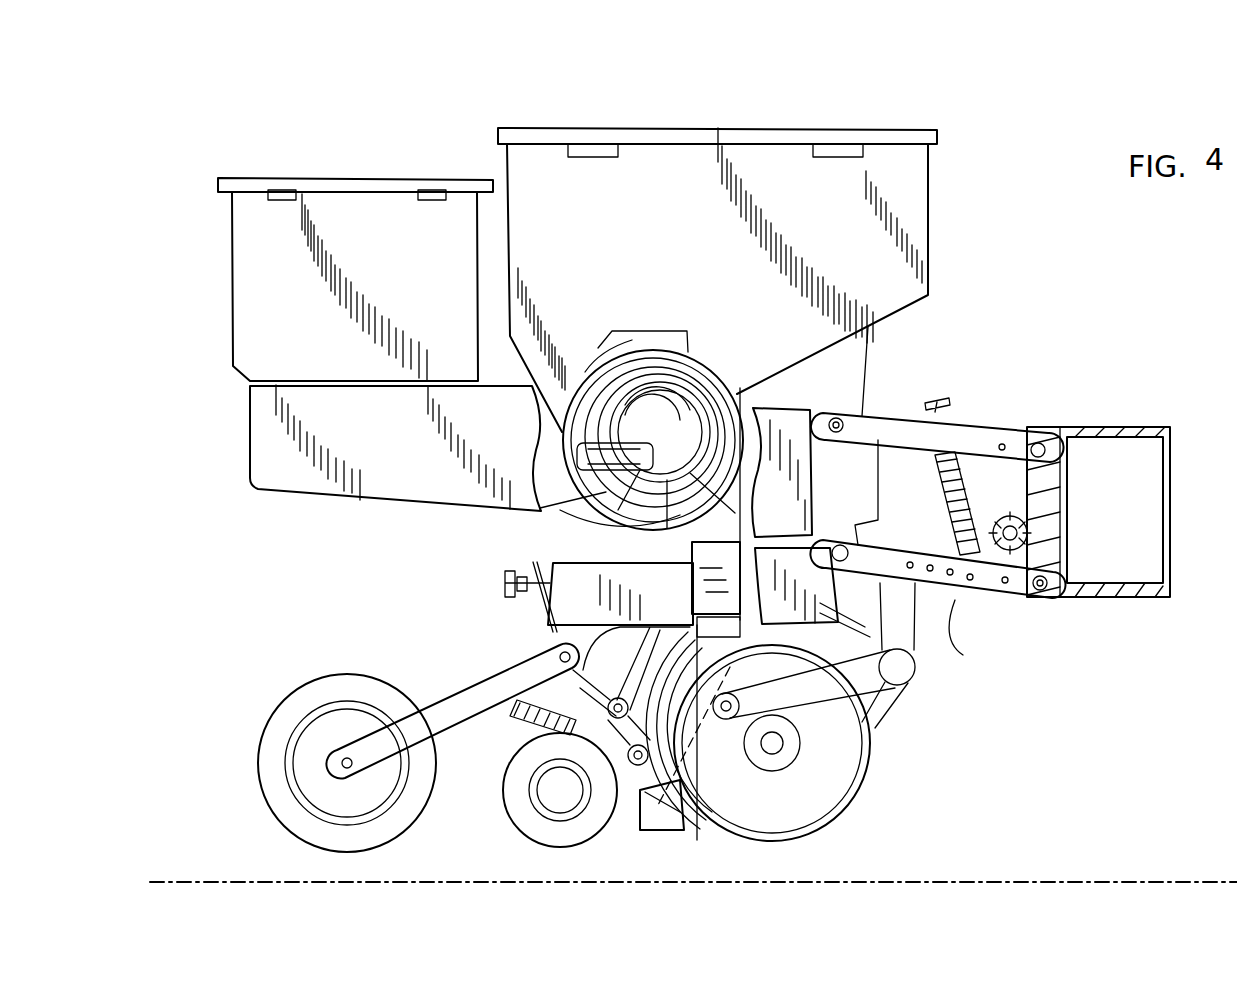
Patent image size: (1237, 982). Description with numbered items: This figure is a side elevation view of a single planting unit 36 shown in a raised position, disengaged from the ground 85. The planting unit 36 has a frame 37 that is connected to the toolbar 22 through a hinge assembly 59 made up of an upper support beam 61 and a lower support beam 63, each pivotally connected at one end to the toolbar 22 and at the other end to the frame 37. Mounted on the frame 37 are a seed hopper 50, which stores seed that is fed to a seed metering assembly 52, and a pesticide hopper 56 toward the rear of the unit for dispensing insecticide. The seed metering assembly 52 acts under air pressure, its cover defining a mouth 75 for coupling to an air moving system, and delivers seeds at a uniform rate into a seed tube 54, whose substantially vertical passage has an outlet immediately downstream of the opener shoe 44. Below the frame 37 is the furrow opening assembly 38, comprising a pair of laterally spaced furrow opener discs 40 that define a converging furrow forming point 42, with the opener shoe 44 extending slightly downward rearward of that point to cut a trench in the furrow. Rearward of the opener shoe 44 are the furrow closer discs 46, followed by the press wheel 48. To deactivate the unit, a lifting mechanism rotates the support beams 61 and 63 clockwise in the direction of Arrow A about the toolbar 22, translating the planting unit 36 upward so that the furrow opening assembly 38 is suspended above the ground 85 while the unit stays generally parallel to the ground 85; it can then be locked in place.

The planting unit 36 is at (976, 74).
The pesticide hopper 56 is at (406, 269).
The seed hopper 50 is at (632, 241).
The seed metering assembly 52 is at (727, 364).
The mouth 75 is at (600, 494).
The seed tube 54 is at (693, 607).
The frame 37 is at (586, 619).
The press wheel 48 is at (388, 826).
The furrow closer discs 46 is at (576, 830).
The furrow opener discs 40 is at (850, 766).
The furrow opening assembly 38 is at (877, 788).
The furrow forming point 42 is at (790, 846).
The opener shoe 44 is at (700, 836).
The hinge assembly 59 is at (1026, 384).
The upper support beam 61 is at (986, 470).
The lower support beam 63 is at (958, 590).
The toolbar 22 is at (1130, 428).
The ground 85 is at (690, 886).